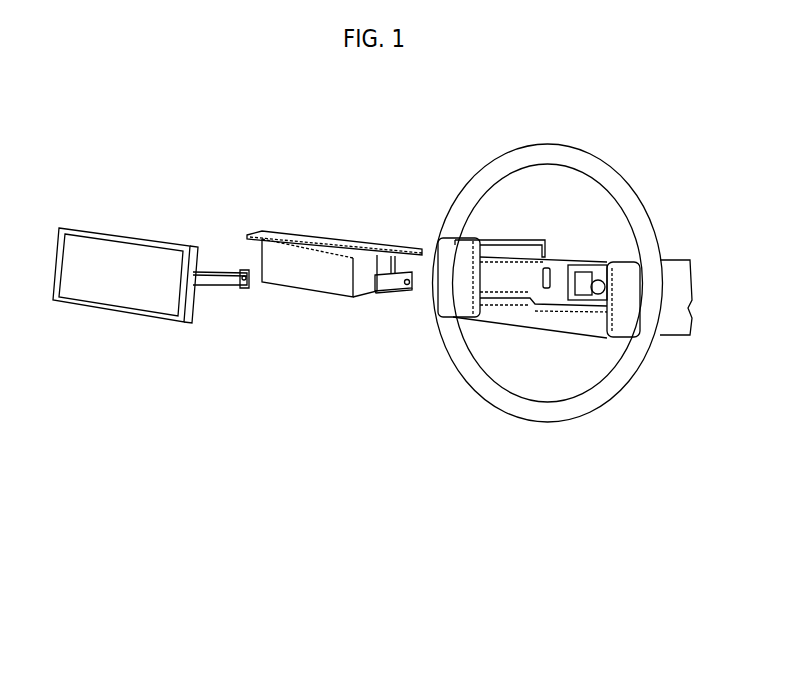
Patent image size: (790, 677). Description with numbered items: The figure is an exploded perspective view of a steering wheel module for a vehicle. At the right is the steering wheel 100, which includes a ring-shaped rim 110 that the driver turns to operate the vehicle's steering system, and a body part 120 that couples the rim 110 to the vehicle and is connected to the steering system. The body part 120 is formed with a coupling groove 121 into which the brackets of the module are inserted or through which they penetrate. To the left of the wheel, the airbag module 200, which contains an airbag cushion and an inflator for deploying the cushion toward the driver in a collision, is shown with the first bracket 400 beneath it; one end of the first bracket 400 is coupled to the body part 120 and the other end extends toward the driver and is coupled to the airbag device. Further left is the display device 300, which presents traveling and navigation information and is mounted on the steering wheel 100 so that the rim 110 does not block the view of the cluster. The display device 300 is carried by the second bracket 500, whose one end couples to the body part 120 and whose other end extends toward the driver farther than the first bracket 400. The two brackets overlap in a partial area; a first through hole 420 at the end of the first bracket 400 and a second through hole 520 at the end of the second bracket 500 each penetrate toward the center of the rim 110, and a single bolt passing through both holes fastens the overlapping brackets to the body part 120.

The steering wheel 100 is at (457, 394).
The rim 110 is at (595, 167).
The body part 120 is at (560, 322).
The coupling groove 121 is at (540, 267).
The airbag module 200 is at (318, 240).
The display device 300 is at (108, 243).
The first bracket 400 is at (383, 282).
The first through hole 420 is at (412, 288).
The second bracket 500 is at (220, 287).
The second through hole 520 is at (250, 287).